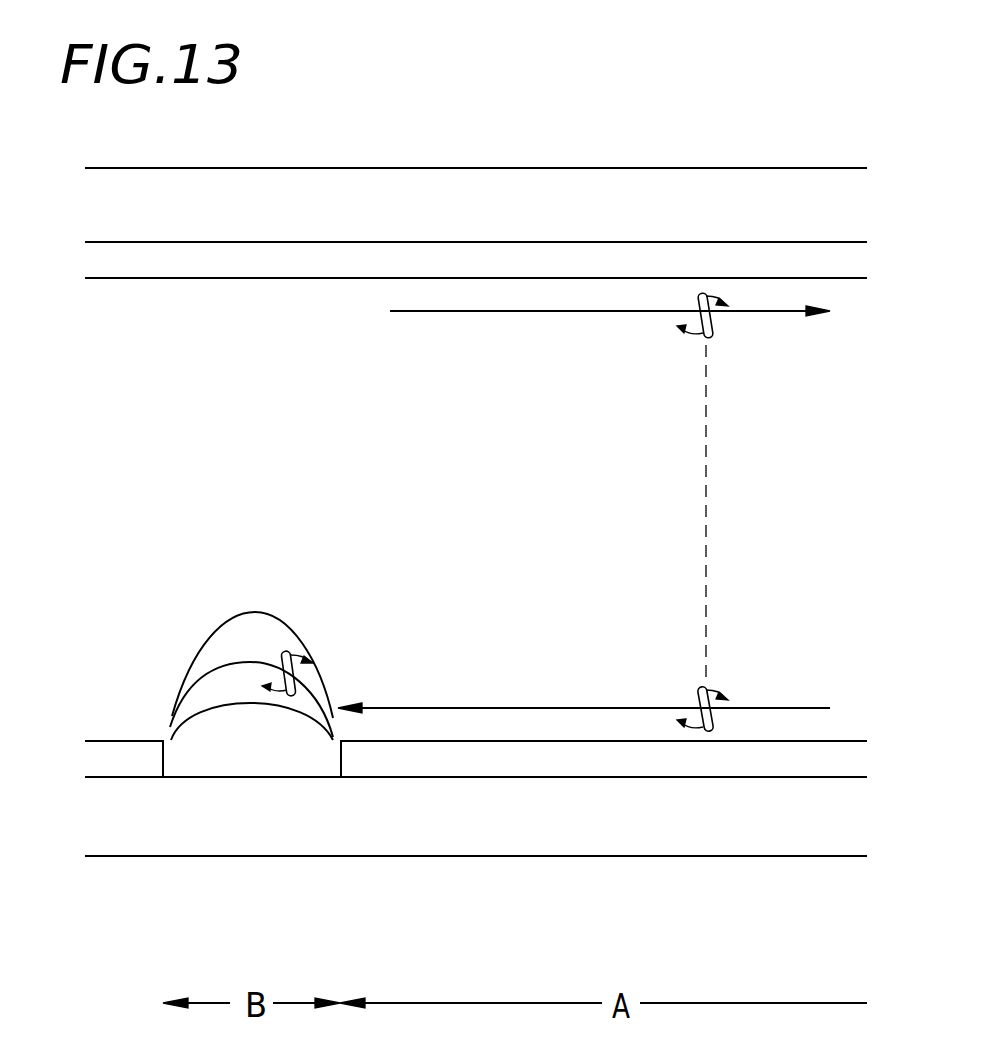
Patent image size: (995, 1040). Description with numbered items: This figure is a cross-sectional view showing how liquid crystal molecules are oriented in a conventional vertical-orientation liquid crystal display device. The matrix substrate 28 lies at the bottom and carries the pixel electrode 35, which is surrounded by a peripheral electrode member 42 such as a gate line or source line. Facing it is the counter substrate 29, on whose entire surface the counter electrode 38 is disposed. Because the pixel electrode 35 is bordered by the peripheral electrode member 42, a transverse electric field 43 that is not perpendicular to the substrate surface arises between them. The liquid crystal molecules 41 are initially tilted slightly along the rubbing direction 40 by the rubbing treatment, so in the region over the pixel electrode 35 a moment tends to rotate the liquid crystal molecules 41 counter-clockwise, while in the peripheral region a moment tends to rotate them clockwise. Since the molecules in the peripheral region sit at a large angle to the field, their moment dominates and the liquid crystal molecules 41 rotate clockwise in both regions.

The matrix substrate 28 is at (430, 830).
The counter substrate 29 is at (340, 208).
The pixel electrode 35 is at (563, 760).
The counter electrode 38 is at (522, 258).
The rubbing direction 40 is at (645, 312).
The liquid crystal molecule 41 is at (702, 292).
The peripheral electrode member 42 is at (135, 762).
The transverse electric field 43 is at (213, 692).